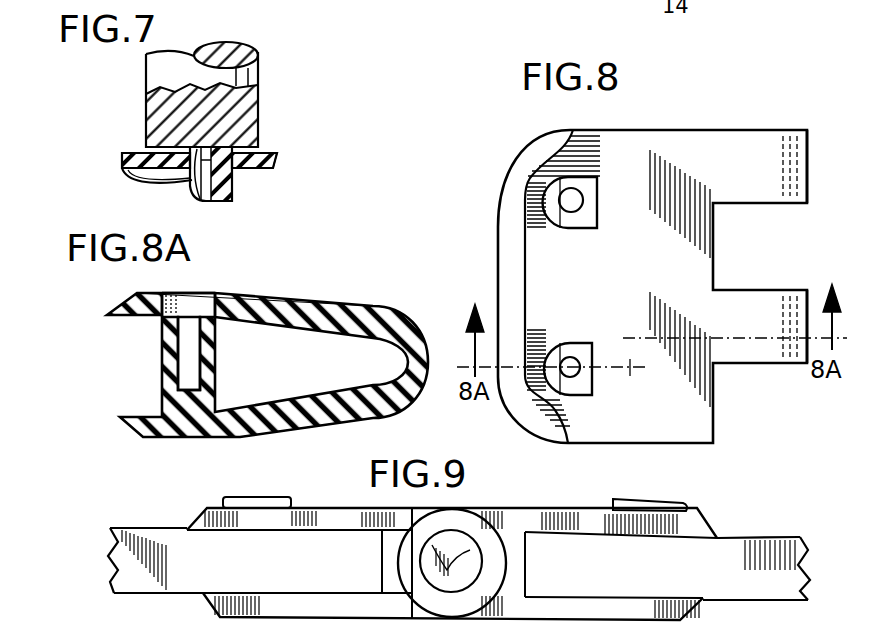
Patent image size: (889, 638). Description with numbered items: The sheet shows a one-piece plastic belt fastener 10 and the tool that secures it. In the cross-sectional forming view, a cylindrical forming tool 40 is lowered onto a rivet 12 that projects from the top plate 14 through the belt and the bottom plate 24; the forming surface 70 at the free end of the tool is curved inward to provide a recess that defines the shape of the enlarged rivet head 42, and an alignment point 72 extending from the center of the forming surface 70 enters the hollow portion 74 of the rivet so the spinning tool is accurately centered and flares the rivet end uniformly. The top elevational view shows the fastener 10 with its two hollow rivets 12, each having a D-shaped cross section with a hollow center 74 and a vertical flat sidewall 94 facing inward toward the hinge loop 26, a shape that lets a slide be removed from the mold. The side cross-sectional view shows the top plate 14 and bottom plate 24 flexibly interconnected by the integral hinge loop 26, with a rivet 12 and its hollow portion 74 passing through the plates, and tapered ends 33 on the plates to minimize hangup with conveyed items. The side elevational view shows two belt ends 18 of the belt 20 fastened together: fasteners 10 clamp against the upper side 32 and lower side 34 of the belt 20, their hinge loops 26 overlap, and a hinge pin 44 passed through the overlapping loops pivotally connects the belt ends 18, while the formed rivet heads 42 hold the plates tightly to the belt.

In FIG. 7, the belt fastener 10 is at (282, 168).
In FIG. 8, the belt fastener 10 is at (752, 124).
In FIG. 8A, the belt fastener 10 is at (332, 294).
In FIG. 7, the rivets 12 is at (227, 202).
In FIG. 8, the rivets 12 is at (598, 189).
In FIG. 8A, the rivets 12 is at (208, 360).
In FIG. 8A, the top plate 14 is at (237, 433).
In FIG. 9, the top plate 14 is at (277, 606).
In FIG. 9, the belt end 18 is at (386, 555).
In FIG. 9, the belt 20 is at (247, 561).
In FIG. 7, the bottom plate 24 is at (277, 158).
In FIG. 8, the bottom plate 24 is at (627, 284).
In FIG. 8A, the bottom plate 24 is at (257, 303).
In FIG. 9, the bottom plate 24 is at (310, 520).
In FIG. 8, the hinge loop 26 is at (799, 152).
In FIG. 8A, the hinge loop 26 is at (412, 328).
In FIG. 9, the hinge loop 26 is at (408, 575).
In FIG. 9, the upper side of the belt 32 is at (113, 596).
In FIG. 8, the tapered ends 33 is at (503, 236).
In FIG. 8A, the tapered ends 33 is at (118, 308).
In FIG. 9, the tapered ends 33 is at (190, 528).
In FIG. 9, the lower side of the belt 34 is at (136, 530).
In FIG. 7, the forming tool 40 is at (260, 101).
In FIG. 7, the rivet head 42 is at (178, 154).
In FIG. 9, the rivet head 42 is at (286, 488).
In FIG. 9, the hinge pin 44 is at (459, 541).
In FIG. 7, the forming surface 70 is at (256, 143).
In FIG. 7, the alignment point 72 is at (206, 182).
In FIG. 7, the hollow portion 74 is at (178, 175).
In FIG. 8, the hollow portion 74 is at (598, 208).
In FIG. 8A, the hollow portion 74 is at (188, 346).
In FIG. 8, the flat sidewall 94 is at (598, 229).